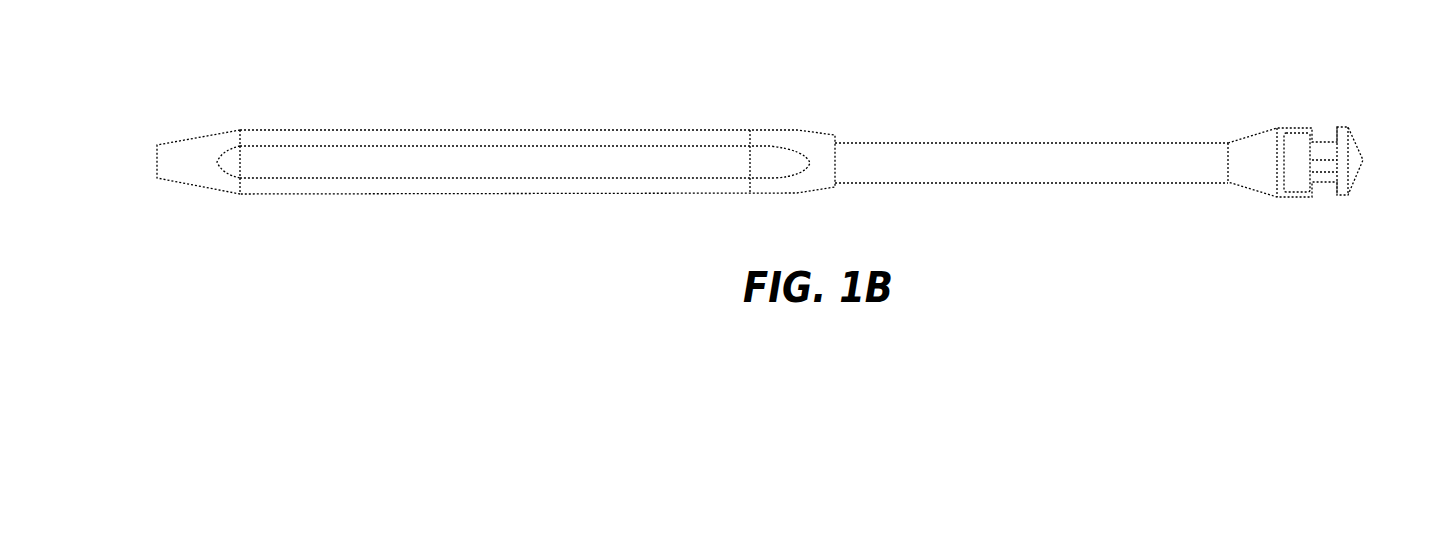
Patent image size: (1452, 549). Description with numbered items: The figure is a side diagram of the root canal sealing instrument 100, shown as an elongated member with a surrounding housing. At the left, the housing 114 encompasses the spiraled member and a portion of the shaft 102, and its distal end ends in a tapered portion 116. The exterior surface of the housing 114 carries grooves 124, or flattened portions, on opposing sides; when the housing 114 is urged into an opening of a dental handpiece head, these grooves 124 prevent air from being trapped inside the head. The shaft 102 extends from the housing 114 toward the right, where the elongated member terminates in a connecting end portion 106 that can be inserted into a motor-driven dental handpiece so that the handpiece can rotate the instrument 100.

The root canal sealing instrument 100 is at (218, 21).
The shaft 102 is at (970, 142).
The connecting end portion 106 is at (1277, 128).
The housing 114 is at (652, 128).
The tapered portion 116 is at (212, 132).
The grooves 124 is at (352, 155).